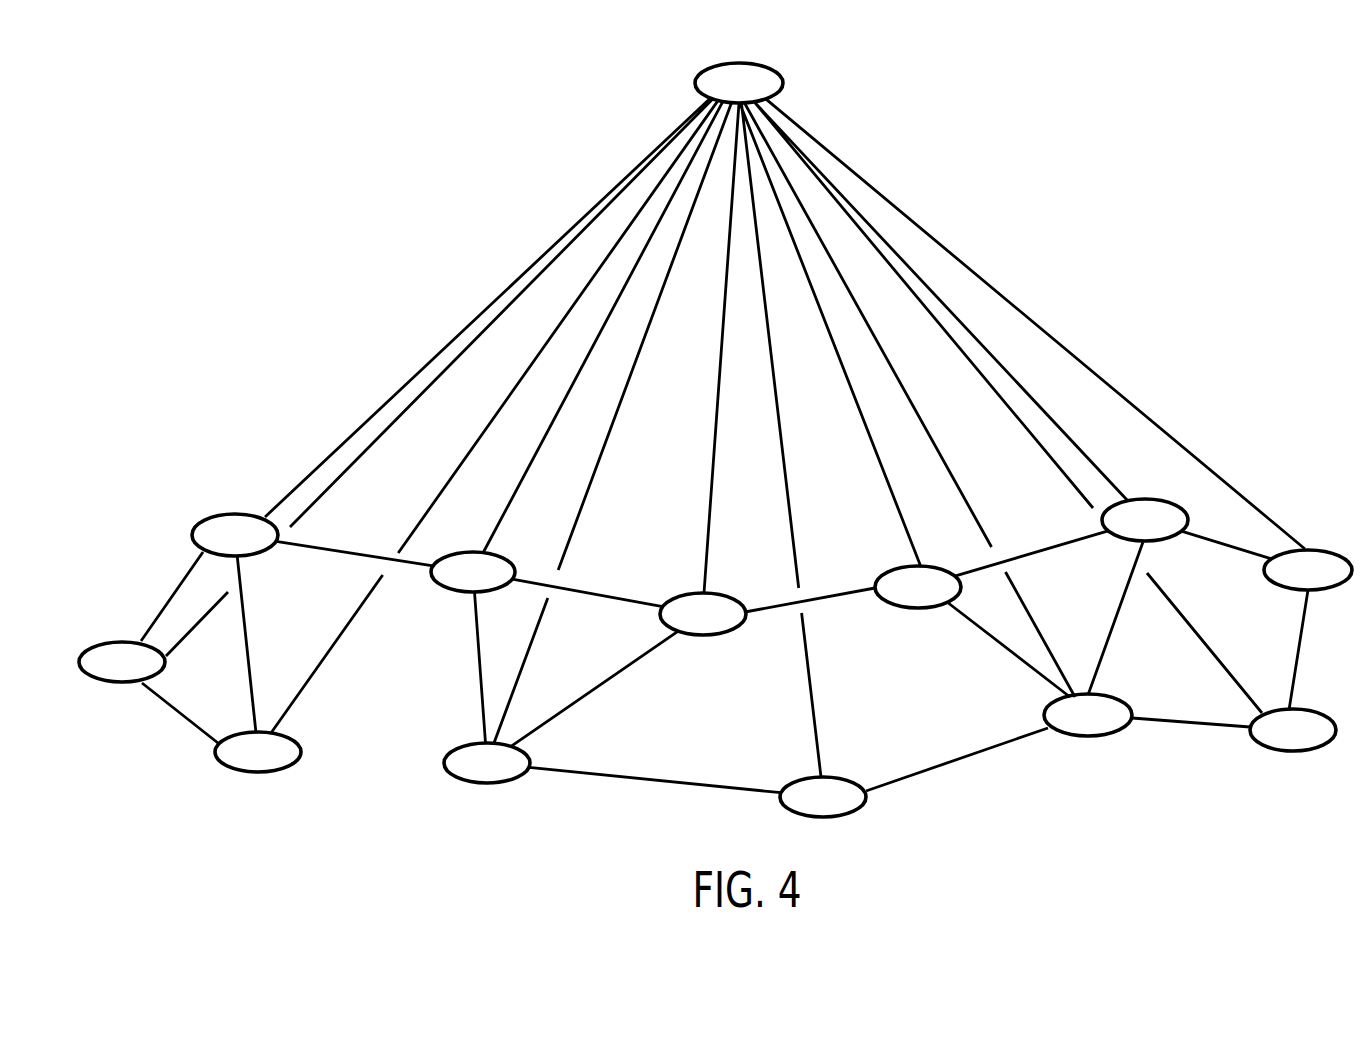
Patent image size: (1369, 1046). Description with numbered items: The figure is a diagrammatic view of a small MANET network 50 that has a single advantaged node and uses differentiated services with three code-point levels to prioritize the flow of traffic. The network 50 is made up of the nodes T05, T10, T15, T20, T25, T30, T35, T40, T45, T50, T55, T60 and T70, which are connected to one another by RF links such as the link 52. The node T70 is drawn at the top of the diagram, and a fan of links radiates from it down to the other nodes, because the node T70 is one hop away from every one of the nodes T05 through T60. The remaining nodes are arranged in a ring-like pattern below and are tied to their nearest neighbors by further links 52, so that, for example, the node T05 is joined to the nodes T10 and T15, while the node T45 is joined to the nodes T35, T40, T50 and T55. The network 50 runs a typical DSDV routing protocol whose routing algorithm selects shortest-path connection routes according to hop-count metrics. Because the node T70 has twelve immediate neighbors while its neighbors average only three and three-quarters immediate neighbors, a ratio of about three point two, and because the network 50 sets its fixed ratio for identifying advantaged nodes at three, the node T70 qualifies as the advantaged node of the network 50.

The small MANET network 50 is at (386, 261).
The link 52 is at (474, 447).
The node T05 is at (102, 676).
The node T10 is at (215, 549).
The node T15 is at (238, 766).
The node T20 is at (453, 586).
The node T25 is at (467, 777).
The node T30 is at (683, 628).
The node T35 is at (803, 811).
The node T40 is at (898, 601).
The node T45 is at (1068, 729).
The node T50 is at (1125, 534).
The node T55 is at (1273, 744).
The node T60 is at (1288, 584).
The node T70 is at (719, 97).